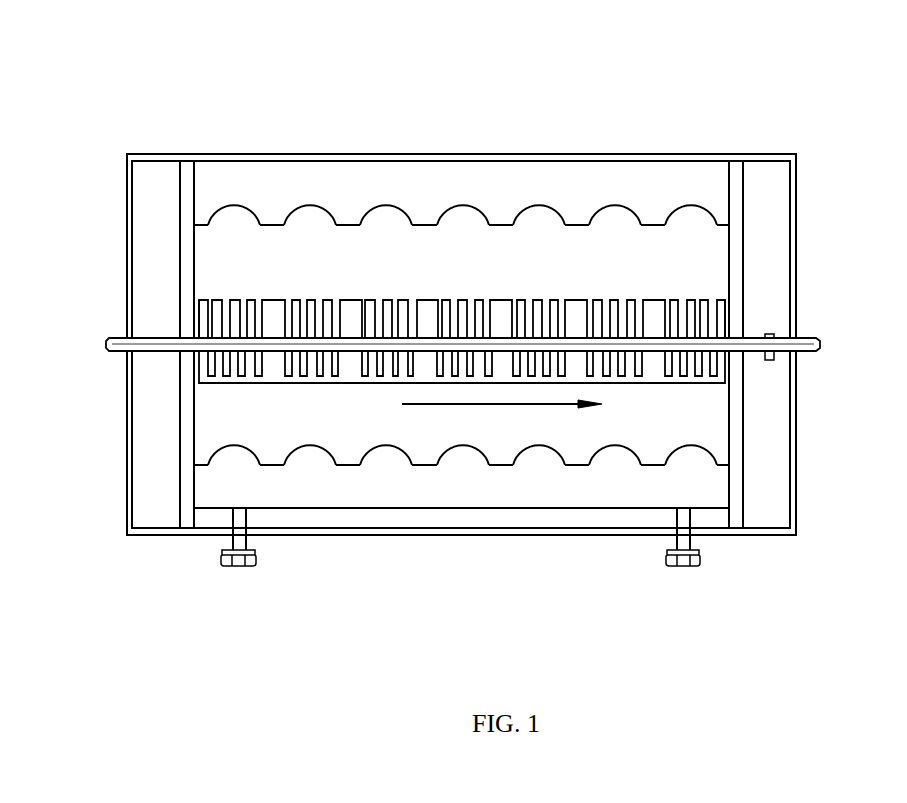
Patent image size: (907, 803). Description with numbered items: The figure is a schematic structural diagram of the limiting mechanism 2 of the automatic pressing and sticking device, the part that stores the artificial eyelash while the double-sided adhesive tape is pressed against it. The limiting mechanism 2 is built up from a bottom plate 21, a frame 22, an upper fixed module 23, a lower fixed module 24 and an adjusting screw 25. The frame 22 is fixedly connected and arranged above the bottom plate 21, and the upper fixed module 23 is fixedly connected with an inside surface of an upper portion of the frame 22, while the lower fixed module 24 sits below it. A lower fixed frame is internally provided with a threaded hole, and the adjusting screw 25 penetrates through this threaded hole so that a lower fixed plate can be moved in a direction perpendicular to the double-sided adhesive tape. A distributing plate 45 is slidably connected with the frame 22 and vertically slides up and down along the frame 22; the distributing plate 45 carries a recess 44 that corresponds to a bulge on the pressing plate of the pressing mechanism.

The limiting mechanism 2 is at (503, 354).
The bottom plate 21 is at (767, 193).
The frame 22 is at (194, 192).
The upper fixed module 23 is at (498, 187).
The lower fixed module 24 is at (468, 508).
The adjusting screw 25 is at (697, 565).
The recess 44 is at (503, 315).
The distributing plate 45 is at (727, 317).